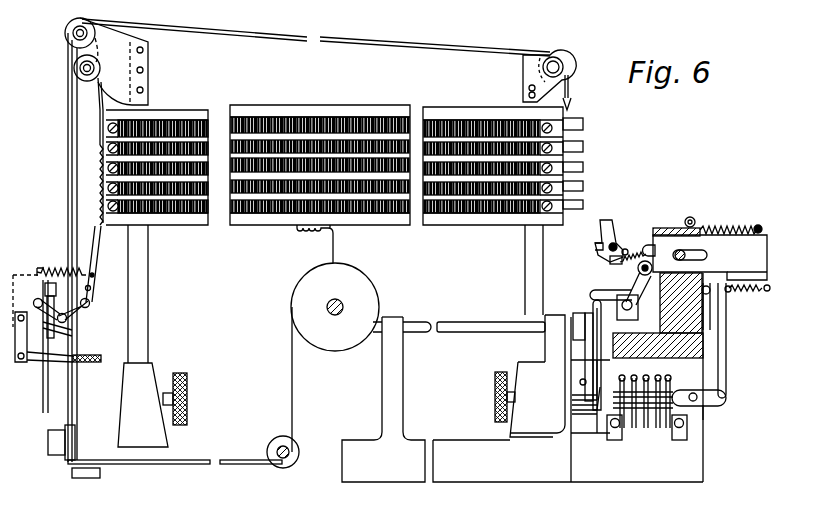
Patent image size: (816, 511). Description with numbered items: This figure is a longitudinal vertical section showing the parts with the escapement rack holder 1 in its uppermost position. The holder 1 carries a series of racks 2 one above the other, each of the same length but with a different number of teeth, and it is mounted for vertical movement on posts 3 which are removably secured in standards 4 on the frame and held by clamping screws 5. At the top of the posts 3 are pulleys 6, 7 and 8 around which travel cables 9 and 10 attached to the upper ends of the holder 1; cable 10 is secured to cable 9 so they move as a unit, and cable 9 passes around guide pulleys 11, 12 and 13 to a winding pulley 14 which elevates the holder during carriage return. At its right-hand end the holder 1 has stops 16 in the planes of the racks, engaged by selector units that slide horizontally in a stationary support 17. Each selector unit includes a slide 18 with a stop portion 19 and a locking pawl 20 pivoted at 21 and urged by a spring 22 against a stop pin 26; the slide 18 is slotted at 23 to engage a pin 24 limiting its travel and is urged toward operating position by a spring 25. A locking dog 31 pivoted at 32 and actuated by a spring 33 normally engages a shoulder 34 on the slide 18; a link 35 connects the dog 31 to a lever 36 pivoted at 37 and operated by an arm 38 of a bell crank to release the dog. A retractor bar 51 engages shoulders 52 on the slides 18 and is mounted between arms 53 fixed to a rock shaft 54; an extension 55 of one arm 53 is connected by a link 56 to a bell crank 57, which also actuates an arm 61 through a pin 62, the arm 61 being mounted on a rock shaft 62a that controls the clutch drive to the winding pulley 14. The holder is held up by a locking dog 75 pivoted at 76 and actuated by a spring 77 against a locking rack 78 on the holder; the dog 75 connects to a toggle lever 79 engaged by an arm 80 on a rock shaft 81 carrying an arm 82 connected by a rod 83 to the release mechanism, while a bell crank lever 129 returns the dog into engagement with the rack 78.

The escapement rack holder 1 is at (182, 112).
The racks 2 is at (296, 116).
The posts 3 is at (150, 272).
The standards 4 is at (150, 378).
The clamping screws 5 is at (189, 393).
The pulley 6 is at (558, 56).
The pulley 7 is at (66, 27).
The pulley 8 is at (74, 70).
The cable 9 is at (238, 36).
The cable 10 is at (99, 98).
The guide pulley 11 is at (75, 437).
The guide pulley 12 is at (72, 470).
The guide pulley 13 is at (285, 467).
The winding pulley 14 is at (333, 348).
The stops 16 is at (583, 168).
The stationary support 17 is at (700, 345).
The slide 18 is at (768, 248).
The stop portion 19 is at (596, 247).
The locking element or pawl 20 is at (605, 224).
The pivot 21 is at (616, 244).
The spring 22 is at (610, 259).
The slot 23 is at (690, 249).
The pin 24 is at (649, 244).
The spring 25 is at (750, 230).
The stop pin 26 is at (627, 249).
The locking dog 31 is at (728, 296).
The pivot 32 is at (706, 300).
The spring 33 is at (765, 292).
The shoulder 34 is at (735, 280).
The link 35 is at (727, 377).
The lever 36 is at (705, 406).
The pivot 37 is at (702, 410).
The arm 38 is at (665, 428).
The retractor bar 51 is at (638, 272).
The shoulders 52 is at (685, 222).
The arms 53 is at (625, 292).
The rock shaft 54 is at (630, 310).
The extension 55 is at (593, 301).
The link 56 is at (599, 412).
The bell crank 57 is at (585, 380).
The arm 61 is at (578, 340).
The pin 62 is at (566, 360).
The rock shaft 62a is at (478, 321).
The locking dog 75 is at (96, 257).
The pivot 76 is at (94, 275).
The spring 77 is at (56, 275).
The locking rack 78 is at (99, 198).
The toggle lever 79 is at (80, 310).
The arm 80 is at (68, 332).
The rock shaft 81 is at (26, 290).
The arm 82 is at (25, 362).
The rod 83 is at (98, 364).
The bell crank lever 129 is at (40, 296).